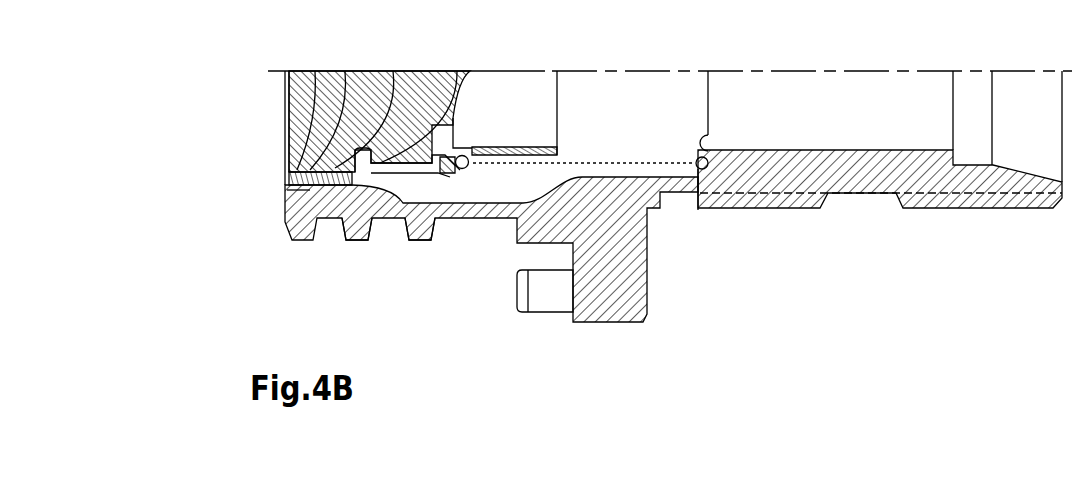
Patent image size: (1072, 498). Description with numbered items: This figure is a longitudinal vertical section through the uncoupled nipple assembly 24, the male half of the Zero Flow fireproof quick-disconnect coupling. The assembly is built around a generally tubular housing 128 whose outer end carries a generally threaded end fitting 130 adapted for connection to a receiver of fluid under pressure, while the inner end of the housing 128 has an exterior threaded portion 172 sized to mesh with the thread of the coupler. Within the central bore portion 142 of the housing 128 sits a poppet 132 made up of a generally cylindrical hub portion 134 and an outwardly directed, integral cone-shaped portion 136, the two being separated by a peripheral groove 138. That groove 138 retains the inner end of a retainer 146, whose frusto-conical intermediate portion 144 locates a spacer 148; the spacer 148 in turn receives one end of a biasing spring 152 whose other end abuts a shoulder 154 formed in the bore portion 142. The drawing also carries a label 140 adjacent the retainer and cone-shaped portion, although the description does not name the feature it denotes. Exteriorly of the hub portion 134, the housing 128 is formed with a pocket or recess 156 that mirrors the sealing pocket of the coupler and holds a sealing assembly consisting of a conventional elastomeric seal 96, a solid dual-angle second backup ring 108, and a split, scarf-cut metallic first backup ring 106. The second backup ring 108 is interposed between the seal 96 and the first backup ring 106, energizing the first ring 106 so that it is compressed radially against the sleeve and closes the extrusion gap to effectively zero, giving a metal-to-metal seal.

The nipple assembly 24 is at (614, 325).
The elastomeric seal 96 is at (388, 70).
The first backup ring 106 is at (300, 70).
The second backup ring 108 is at (338, 70).
The housing 128 is at (790, 218).
The end fitting 130 is at (1027, 210).
The poppet 132 is at (275, 109).
The hub portion 134 is at (288, 138).
The cone-shaped portion 136 is at (447, 70).
The peripheral groove 138 is at (358, 188).
The chamber 140 is at (455, 145).
The central bore portion 142 is at (292, 182).
The frusto-conical intermediate portion 144 is at (540, 298).
The retainer 146 is at (426, 186).
The spacer 148 is at (459, 185).
The biasing spring 152 is at (700, 196).
The shoulder 154 is at (706, 135).
The pocket or recess 156 is at (327, 196).
The exterior threaded portion 172 is at (420, 207).